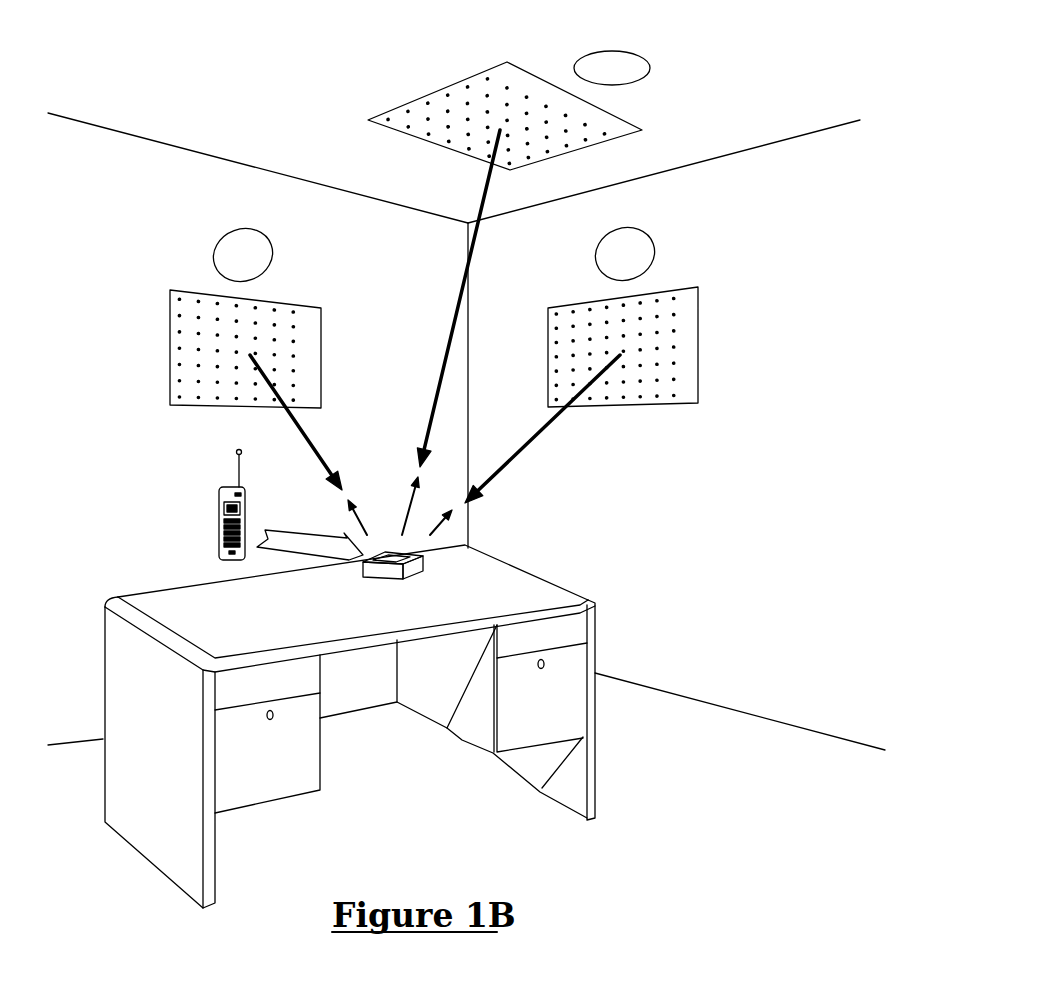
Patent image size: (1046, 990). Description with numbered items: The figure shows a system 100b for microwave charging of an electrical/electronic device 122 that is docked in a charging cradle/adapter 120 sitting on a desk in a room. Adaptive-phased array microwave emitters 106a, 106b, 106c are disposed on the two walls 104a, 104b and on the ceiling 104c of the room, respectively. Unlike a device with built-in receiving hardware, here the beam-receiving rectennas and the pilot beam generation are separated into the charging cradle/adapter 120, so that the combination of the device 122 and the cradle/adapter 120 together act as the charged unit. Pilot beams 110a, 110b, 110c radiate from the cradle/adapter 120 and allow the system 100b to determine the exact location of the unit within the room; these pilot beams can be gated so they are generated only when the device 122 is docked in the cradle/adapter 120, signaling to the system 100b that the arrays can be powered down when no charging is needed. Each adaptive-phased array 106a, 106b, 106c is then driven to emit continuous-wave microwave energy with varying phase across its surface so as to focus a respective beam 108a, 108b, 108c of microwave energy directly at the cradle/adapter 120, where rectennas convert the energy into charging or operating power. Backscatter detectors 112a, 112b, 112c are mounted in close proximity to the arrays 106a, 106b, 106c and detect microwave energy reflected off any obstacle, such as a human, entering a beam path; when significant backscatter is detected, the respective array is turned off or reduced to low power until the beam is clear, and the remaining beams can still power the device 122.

The system for microwave charging 100b is at (258, 37).
The wall 104a is at (84, 503).
The wall 104b is at (652, 543).
The ceiling 104c is at (205, 98).
The adaptive-phased array microwave emitter 106a is at (170, 302).
The adaptive-phased array microwave emitter 106b is at (546, 326).
The adaptive-phased array microwave emitter 106c is at (645, 130).
The beam of microwave energy 108a is at (300, 430).
The beam of microwave energy 108b is at (522, 451).
The beam of microwave energy 108c is at (432, 397).
The pilot beam 110a is at (352, 510).
The pilot beam 110b is at (410, 502).
The pilot beam 110c is at (442, 536).
The backscatter detector 112a is at (213, 252).
The backscatter detector 112b is at (595, 259).
The backscatter detector 112c is at (651, 64).
The charging cradle/adapter 120 is at (427, 567).
The electrical/electronic device 122 is at (217, 532).